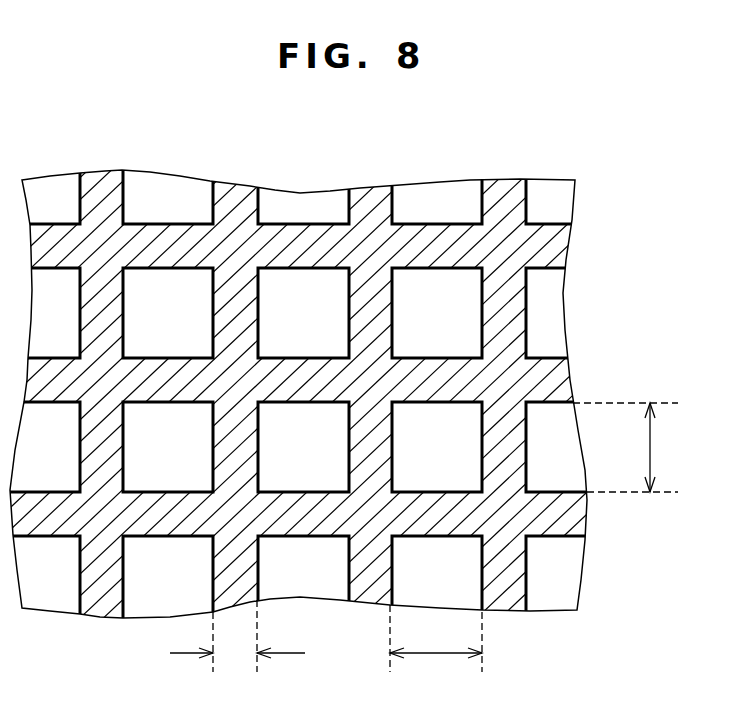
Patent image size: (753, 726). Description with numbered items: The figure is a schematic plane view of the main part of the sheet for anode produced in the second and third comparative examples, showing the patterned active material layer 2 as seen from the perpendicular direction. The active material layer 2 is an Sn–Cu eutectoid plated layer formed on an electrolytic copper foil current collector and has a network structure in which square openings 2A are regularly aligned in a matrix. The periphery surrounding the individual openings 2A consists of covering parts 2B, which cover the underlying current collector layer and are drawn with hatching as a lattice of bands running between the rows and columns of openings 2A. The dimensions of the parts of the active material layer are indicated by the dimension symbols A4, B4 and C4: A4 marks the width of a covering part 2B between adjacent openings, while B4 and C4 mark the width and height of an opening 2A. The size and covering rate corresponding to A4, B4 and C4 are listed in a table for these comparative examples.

The active material layer 2 is at (393, 153).
The opening 2A is at (298, 300).
The covering part 2B is at (362, 252).
The covering part width (size of active material layer part) A4 is at (237, 647).
The opening width (size of active material layer part) B4 is at (436, 650).
The opening height (size of active material layer part) C4 is at (635, 447).